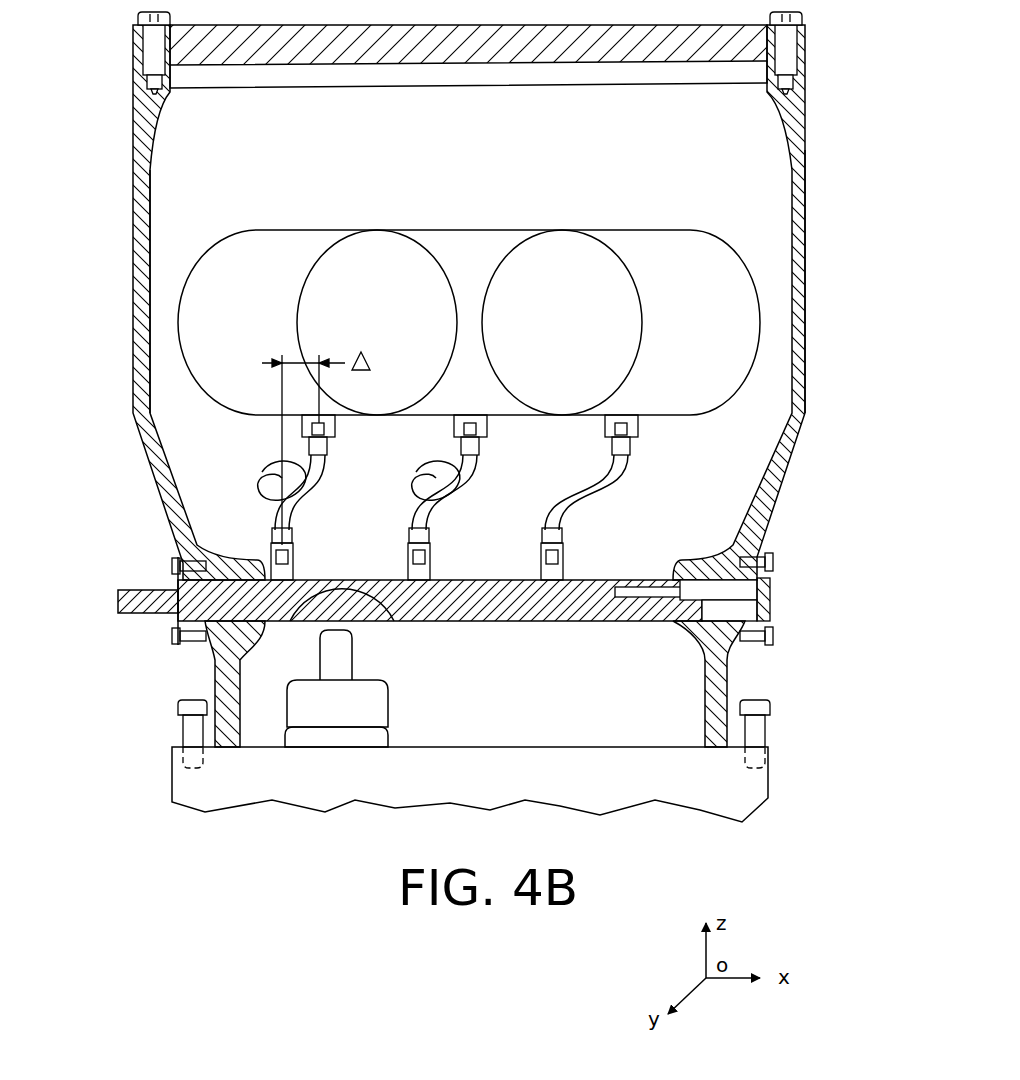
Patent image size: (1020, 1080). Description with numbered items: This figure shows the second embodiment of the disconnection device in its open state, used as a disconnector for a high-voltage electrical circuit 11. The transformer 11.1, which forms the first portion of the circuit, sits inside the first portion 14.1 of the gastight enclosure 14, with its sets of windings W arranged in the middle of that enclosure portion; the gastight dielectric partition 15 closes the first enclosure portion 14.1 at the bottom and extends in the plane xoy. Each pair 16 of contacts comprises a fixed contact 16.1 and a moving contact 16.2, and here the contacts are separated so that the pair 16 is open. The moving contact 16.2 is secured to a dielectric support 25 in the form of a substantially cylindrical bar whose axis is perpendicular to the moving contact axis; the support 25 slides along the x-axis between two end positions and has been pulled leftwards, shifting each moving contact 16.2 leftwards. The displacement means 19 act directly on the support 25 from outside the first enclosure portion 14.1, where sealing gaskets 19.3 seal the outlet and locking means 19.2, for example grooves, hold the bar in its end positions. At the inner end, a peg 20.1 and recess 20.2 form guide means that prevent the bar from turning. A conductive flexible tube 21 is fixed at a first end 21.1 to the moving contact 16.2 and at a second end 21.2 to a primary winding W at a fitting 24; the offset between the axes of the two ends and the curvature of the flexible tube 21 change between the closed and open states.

The high-voltage electrical circuit 11 is at (115, 366).
The transformer 11.1 is at (135, 283).
The gastight enclosure 14 is at (822, 325).
The first portion of the gastight enclosure 14.1 is at (805, 240).
The gastight dielectric partition 15 is at (758, 780).
The pair of contacts 16 is at (395, 668).
The fixed contact 16.1 is at (372, 680).
The moving contact 16.2 is at (372, 612).
The displacement means 19 is at (125, 606).
The locking means 19.2 is at (172, 589).
The sealing gasket 19.3 is at (252, 628).
The peg 20.1 is at (750, 588).
The recess 20.2 is at (640, 596).
The flexible tube 21 is at (293, 497).
The first end of the flexible tube 21.1 is at (291, 535).
The second end of the flexible tube 21.2 is at (310, 449).
The fitting 24 is at (326, 433).
The dielectric support 25 is at (498, 580).
The set of windings W is at (283, 224).